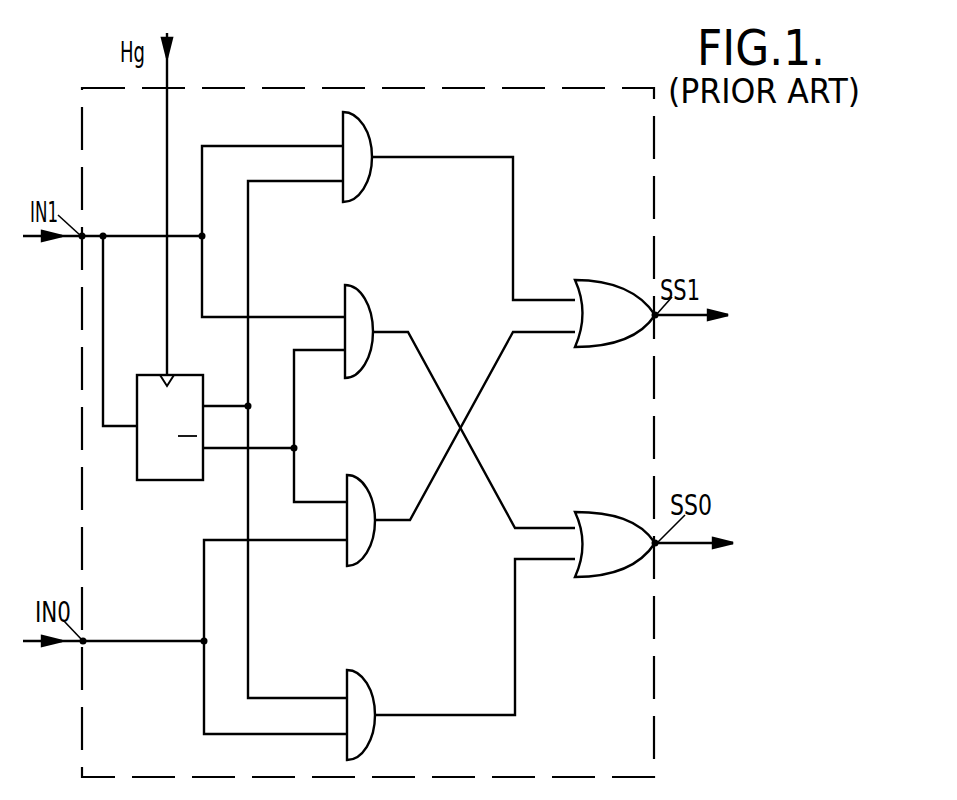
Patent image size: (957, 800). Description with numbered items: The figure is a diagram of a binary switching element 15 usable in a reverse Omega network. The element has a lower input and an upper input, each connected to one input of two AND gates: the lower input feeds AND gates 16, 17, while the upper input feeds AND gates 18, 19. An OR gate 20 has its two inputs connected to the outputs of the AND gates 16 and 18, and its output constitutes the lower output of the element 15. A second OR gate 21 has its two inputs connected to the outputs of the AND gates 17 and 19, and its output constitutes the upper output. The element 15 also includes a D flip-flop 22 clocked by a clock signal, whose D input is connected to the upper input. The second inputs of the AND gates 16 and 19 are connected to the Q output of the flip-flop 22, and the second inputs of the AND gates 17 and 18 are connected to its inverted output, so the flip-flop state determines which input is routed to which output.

The binary switching element 15 is at (440, 88).
The AND gate 16 is at (360, 700).
The AND gate 17 is at (358, 530).
The AND gate 18 is at (355, 312).
The AND gate 19 is at (358, 163).
The OR gate 20 is at (600, 553).
The OR gate 21 is at (607, 297).
The D flip-flop 22 is at (155, 482).